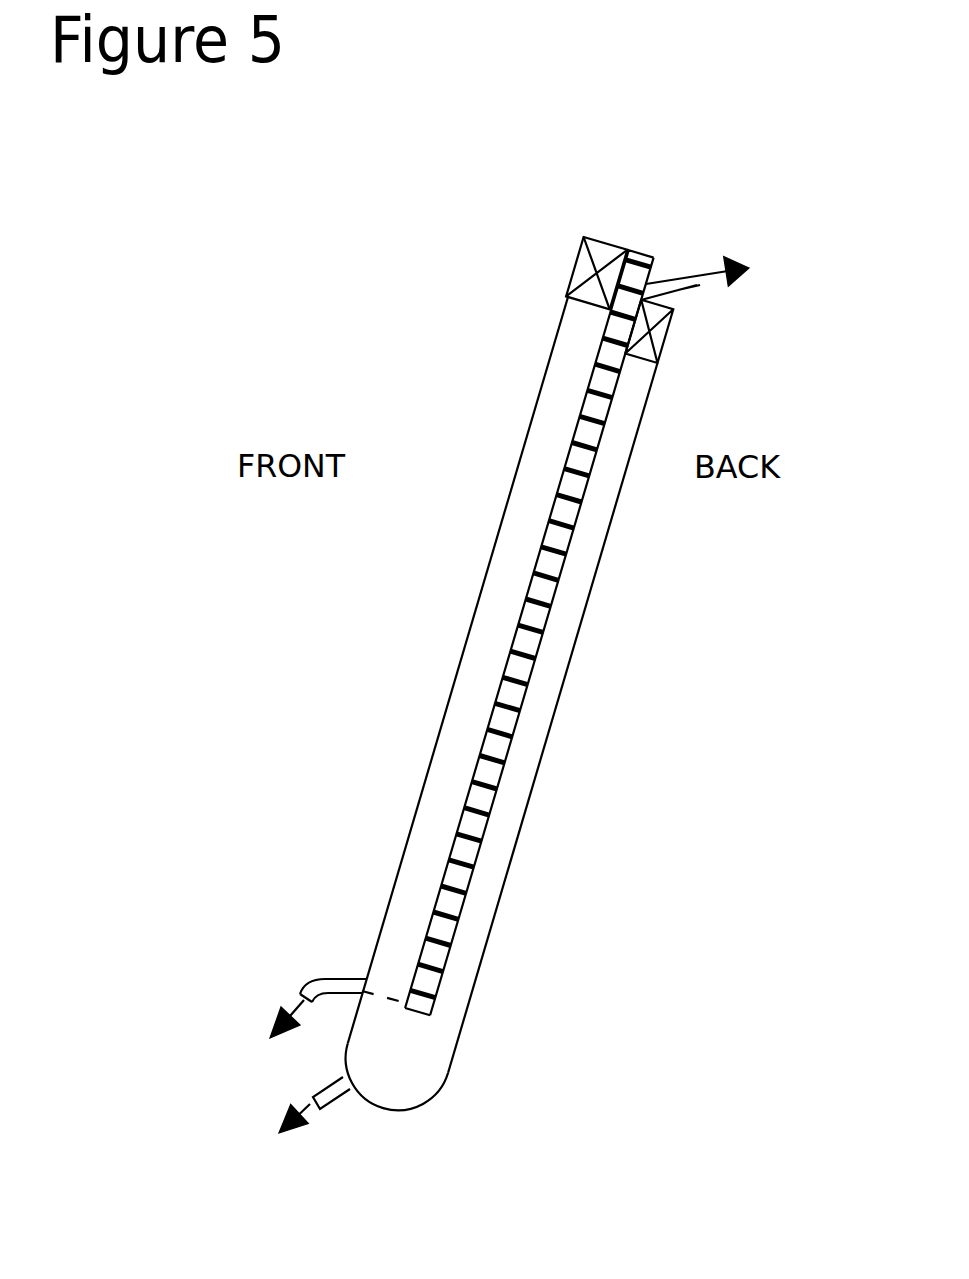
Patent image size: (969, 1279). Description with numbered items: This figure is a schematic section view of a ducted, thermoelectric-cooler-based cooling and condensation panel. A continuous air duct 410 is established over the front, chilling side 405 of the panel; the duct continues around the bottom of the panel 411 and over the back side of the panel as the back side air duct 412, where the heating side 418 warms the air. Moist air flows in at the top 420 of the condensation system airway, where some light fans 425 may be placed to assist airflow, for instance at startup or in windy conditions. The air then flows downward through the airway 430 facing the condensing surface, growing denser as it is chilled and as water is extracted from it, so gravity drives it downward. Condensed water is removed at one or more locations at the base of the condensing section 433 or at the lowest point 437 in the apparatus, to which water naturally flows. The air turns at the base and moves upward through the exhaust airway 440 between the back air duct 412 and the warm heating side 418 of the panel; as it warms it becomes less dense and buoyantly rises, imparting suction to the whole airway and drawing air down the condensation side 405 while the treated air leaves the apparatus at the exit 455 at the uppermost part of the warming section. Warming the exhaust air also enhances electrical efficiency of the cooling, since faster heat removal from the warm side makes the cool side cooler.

The front chilling side 405 is at (452, 807).
The continuous air duct 410 is at (532, 413).
The bottom of the panel 411 is at (420, 1093).
The back side air duct 412 is at (580, 622).
The heating side 418 is at (501, 755).
The top of the condensation system airway 420 is at (563, 268).
The light fans 425 is at (605, 253).
The airway facing the condensing surface 430 is at (488, 610).
The base of the condensing section 433 is at (302, 984).
The lowest point in the apparatus 437 is at (312, 1082).
The exhaust airway 440 is at (475, 903).
The apparatus exit 455 is at (723, 304).